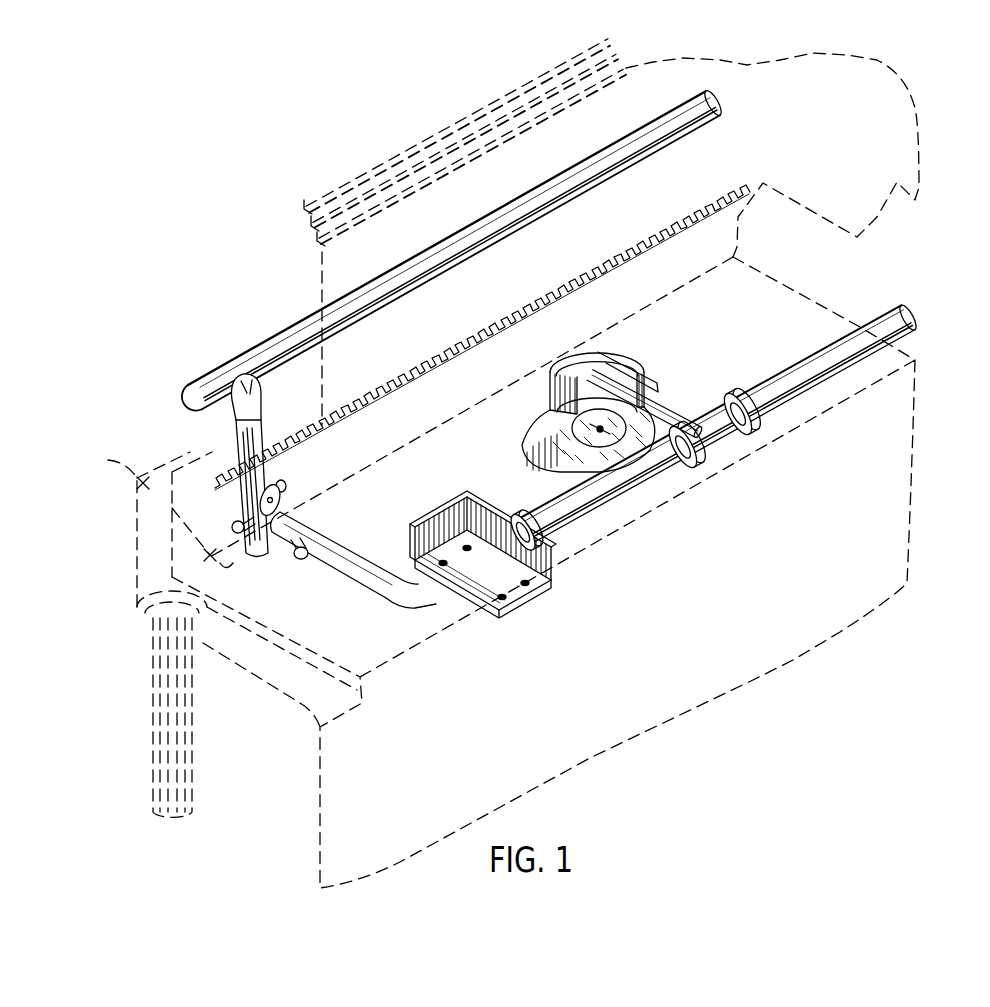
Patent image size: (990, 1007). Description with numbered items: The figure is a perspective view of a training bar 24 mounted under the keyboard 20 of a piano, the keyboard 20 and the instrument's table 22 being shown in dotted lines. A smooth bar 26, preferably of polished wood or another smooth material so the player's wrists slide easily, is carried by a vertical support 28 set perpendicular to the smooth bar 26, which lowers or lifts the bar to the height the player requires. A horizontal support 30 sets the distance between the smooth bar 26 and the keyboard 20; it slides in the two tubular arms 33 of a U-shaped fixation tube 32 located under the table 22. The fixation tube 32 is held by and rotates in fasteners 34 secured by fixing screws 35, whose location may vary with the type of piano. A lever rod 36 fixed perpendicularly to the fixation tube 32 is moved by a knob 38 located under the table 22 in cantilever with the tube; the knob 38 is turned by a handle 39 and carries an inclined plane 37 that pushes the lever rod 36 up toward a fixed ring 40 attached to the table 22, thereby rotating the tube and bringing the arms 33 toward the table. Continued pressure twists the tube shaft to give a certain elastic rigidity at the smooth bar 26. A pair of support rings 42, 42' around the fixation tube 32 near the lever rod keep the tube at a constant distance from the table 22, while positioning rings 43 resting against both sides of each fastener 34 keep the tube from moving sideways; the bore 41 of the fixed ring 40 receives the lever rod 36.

The keyboard 20 is at (213, 480).
The table 22 is at (140, 464).
The training bar 24 is at (533, 186).
The smooth bar 26 is at (193, 387).
The vertical support 28 is at (240, 457).
The horizontal support 30 is at (290, 530).
The U-shaped fixation tube 32 is at (893, 340).
The arms 33 is at (353, 560).
The fasteners 34 is at (513, 583).
The fixing screws 35 is at (507, 603).
The lever rod 36 is at (652, 400).
The inclined plane 37 is at (613, 413).
The knob 38 is at (547, 402).
The handle 39 is at (523, 455).
The fixed ring 40 is at (600, 345).
The bore 41 is at (592, 437).
The support rings 42 is at (777, 436).
The bushing 42' is at (715, 464).
The positioning rings 43 is at (513, 516).